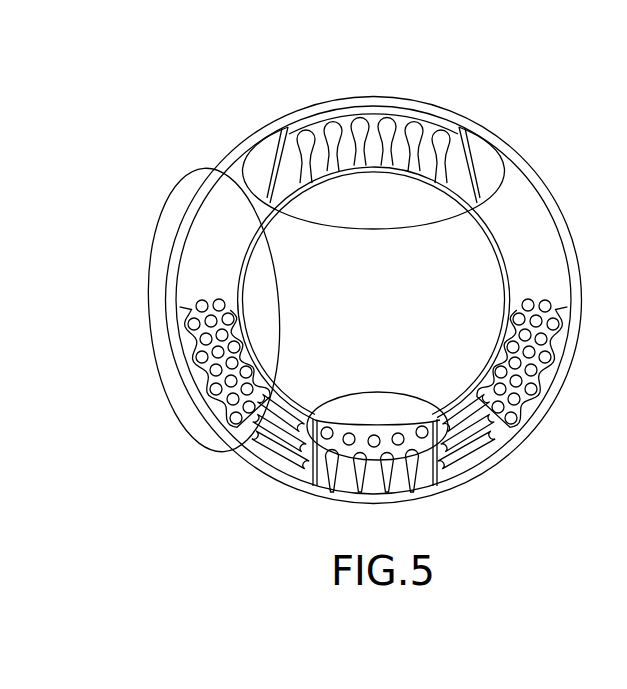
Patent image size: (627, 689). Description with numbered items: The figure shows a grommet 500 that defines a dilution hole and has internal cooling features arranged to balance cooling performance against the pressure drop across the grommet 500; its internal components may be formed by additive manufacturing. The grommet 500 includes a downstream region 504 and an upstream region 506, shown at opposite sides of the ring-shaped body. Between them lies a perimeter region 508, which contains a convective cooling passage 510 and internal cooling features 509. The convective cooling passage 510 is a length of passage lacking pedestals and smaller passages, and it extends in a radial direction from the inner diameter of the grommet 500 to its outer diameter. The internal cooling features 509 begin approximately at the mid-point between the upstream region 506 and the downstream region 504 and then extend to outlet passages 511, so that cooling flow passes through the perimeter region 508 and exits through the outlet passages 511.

The grommet 500 is at (506, 63).
The downstream region 504 is at (387, 391).
The upstream region 506 is at (502, 143).
The perimeter region 508 is at (171, 203).
The internal cooling features 509 is at (200, 305).
The convective cooling passage 510 is at (213, 232).
The outlet passages 511 is at (258, 450).